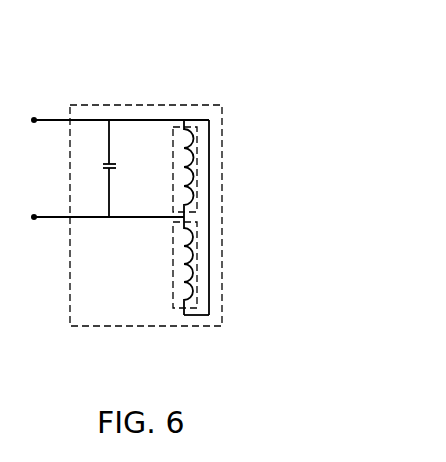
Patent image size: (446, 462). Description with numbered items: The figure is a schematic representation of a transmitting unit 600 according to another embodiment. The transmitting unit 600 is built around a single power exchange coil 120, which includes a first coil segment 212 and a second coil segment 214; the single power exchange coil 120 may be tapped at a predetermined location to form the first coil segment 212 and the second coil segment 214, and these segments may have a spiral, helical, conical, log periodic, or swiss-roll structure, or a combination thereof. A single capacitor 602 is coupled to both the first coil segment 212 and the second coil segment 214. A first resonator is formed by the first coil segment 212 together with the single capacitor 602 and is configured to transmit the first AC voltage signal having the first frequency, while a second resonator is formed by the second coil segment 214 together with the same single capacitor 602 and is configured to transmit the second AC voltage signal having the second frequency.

The transmitting unit 600 is at (213, 179).
The single power exchange coil 120 is at (221, 206).
The first coil segment 212 is at (199, 170).
The second coil segment 214 is at (199, 266).
The single capacitor 602 is at (113, 165).